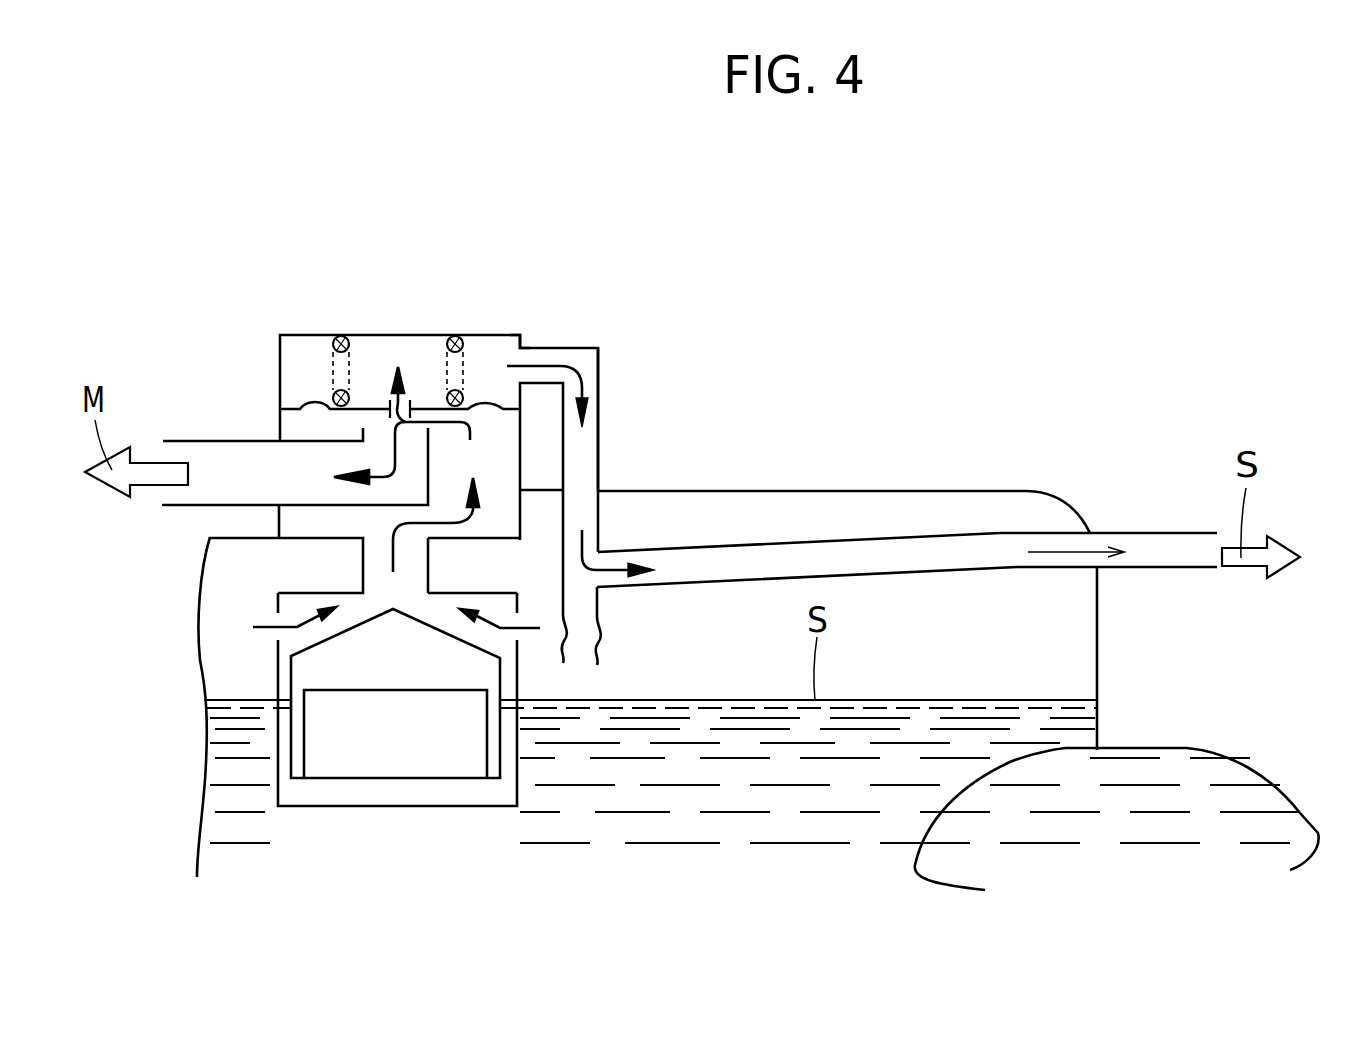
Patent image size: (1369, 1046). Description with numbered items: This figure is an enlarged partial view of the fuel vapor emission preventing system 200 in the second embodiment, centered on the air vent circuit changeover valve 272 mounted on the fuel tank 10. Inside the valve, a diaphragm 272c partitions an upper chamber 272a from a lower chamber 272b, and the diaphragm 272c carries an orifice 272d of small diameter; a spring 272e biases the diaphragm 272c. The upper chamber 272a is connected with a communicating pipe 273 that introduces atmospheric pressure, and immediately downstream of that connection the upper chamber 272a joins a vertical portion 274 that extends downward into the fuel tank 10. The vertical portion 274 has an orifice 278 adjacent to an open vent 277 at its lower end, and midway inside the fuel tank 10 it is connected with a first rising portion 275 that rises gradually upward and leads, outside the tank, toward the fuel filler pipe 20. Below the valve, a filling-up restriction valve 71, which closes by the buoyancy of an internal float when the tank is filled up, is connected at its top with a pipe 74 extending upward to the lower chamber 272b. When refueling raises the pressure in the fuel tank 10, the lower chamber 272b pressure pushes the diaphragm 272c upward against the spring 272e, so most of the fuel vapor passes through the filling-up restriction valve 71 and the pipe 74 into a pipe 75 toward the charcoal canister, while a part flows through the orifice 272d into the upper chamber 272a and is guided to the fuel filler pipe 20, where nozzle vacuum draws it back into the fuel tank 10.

The fuel vapor emission preventing system 200 is at (215, 177).
The air vent circuit changeover valve 272 is at (303, 334).
The upper chamber 272a is at (500, 353).
The lower chamber 272b is at (500, 468).
The diaphragm 272c is at (373, 402).
The orifice 272d is at (407, 402).
The spring 272e is at (335, 393).
The communicating pipe 273 is at (617, 347).
The vertical portion 274 is at (587, 443).
The first rising portion 275 is at (927, 557).
The open vent 277 is at (587, 613).
The orifice 278 is at (577, 650).
The fuel tank 10 is at (1040, 484).
The fuel filler pipe 20 is at (1290, 781).
The filling-up restriction valve 71 is at (365, 763).
The pipe 74 is at (375, 563).
The pipe 75 is at (217, 497).